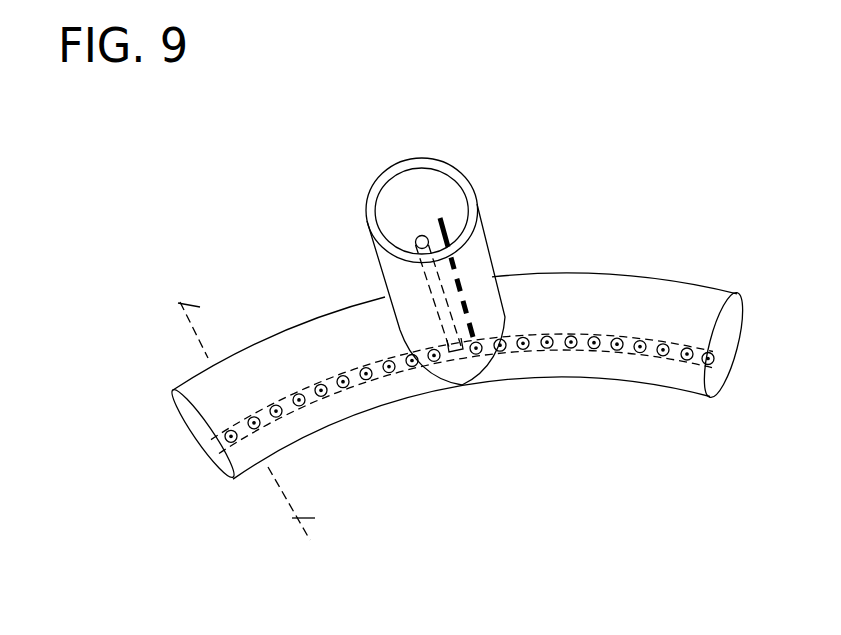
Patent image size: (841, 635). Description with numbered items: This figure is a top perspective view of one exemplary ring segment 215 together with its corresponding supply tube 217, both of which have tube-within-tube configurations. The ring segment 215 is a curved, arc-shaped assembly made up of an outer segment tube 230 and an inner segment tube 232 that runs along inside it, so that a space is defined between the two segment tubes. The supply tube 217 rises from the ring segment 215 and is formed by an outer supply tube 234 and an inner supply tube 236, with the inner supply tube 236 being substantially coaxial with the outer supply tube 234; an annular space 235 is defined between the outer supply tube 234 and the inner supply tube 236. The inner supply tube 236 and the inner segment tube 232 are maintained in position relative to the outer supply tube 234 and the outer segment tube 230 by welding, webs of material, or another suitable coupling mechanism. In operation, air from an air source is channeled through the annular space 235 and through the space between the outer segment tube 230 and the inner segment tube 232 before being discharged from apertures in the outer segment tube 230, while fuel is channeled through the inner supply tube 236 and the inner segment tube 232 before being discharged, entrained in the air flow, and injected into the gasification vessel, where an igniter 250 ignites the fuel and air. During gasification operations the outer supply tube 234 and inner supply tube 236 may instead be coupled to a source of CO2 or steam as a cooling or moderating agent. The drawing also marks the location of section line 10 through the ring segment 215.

The section line 10- 10 is at (198, 308).
The ring segment 215 is at (265, 322).
The supply tube 217 is at (343, 232).
The outer segment tube 230 is at (175, 388).
The inner segment tube 232 is at (290, 413).
The outer supply tube 234 is at (368, 207).
The annular space 235 is at (429, 188).
The inner supply tube 236 is at (423, 284).
The igniter 250 is at (452, 217).